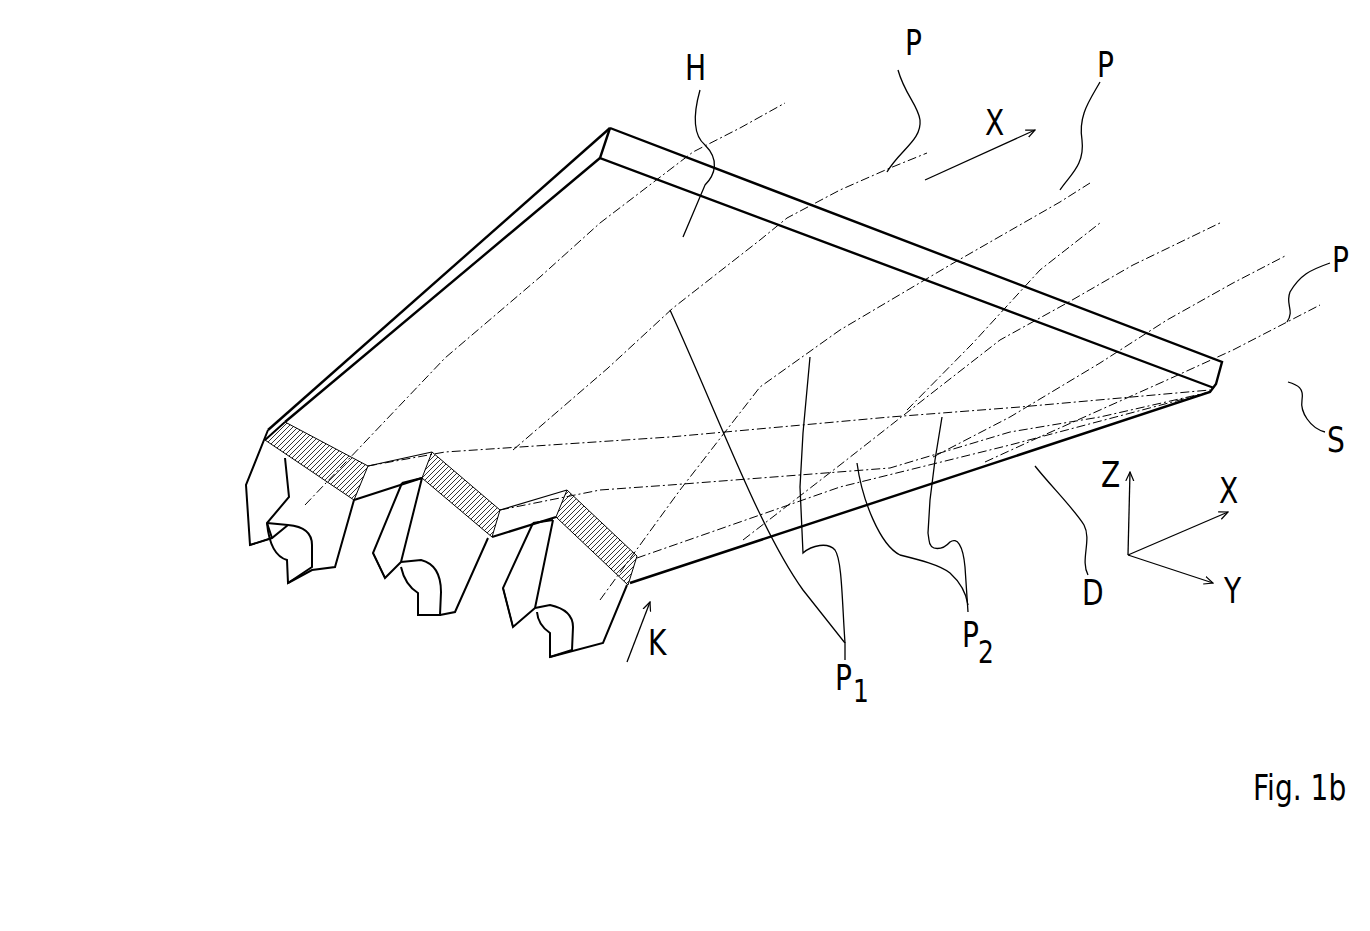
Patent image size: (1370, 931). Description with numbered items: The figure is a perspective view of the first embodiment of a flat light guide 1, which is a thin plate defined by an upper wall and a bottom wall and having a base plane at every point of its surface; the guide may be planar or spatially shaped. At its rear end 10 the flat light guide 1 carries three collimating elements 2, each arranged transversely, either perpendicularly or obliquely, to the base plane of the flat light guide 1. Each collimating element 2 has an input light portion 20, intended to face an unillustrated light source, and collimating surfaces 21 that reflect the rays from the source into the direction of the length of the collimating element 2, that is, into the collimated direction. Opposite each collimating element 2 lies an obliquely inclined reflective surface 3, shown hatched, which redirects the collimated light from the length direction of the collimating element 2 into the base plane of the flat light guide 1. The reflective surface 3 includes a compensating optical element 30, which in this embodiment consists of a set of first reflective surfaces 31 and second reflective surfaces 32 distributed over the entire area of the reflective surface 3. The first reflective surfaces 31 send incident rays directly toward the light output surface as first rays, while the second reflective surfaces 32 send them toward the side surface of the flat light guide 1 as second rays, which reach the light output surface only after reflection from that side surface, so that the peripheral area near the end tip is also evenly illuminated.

The flat light guide 1 is at (478, 257).
The collimating element 2 is at (267, 505).
The reflective surface 3 is at (625, 518).
The rear end 10 is at (346, 737).
The input light portion 20 is at (268, 563).
The collimating surfaces 21 is at (255, 510).
The compensating optical element 30 is at (451, 503).
The first reflective surfaces 31 is at (451, 503).
The second reflective surfaces 32 is at (435, 452).